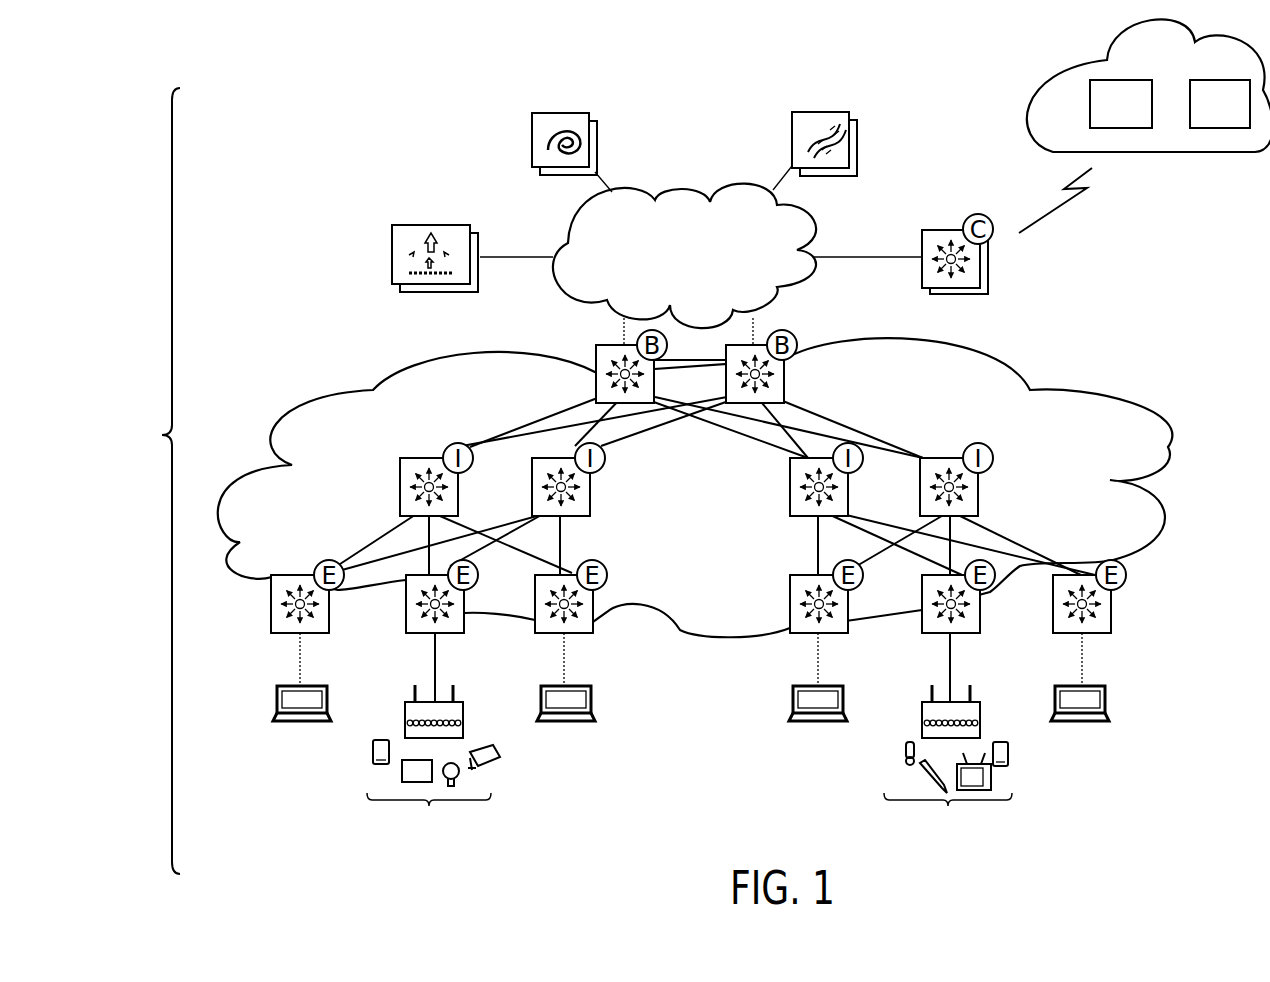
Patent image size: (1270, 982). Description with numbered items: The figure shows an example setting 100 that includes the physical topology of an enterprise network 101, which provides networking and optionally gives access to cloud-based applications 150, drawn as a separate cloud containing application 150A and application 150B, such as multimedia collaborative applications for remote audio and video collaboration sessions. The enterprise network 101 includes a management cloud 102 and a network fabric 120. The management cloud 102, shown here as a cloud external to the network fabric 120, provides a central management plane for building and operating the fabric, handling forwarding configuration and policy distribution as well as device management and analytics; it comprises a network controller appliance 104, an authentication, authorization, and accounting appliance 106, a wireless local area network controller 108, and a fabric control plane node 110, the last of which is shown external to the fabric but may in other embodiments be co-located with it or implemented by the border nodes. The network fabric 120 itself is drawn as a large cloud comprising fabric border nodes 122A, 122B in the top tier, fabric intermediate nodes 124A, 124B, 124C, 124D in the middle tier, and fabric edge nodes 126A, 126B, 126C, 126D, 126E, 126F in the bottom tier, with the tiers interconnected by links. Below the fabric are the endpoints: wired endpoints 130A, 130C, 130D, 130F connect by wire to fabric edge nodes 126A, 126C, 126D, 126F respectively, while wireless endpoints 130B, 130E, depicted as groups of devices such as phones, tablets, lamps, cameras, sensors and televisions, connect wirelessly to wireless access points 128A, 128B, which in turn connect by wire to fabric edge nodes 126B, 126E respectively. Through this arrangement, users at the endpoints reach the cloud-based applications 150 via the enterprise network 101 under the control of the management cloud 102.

The example setting 100 is at (375, 106).
The enterprise network 101 is at (150, 481).
The management cloud 102 is at (566, 232).
The network controller appliance 104 is at (791, 138).
The authentication, authorization, and accounting (AAA) appliance 106 is at (531, 137).
The wireless local area network controller (WLC) 108 is at (391, 258).
The fabric control plane node 110 is at (922, 240).
The network fabric 120 is at (702, 504).
The fabric border node 122A is at (596, 348).
The fabric border node 122B is at (797, 352).
The fabric intermediate node 124A is at (400, 484).
The fabric intermediate node 124B is at (590, 510).
The fabric intermediate node 124C is at (790, 507).
The fabric intermediate node 124D is at (979, 484).
The fabric edge node 126A is at (273, 634).
The fabric edge node 126B is at (406, 634).
The fabric edge node 126C is at (594, 622).
The fabric edge node 126D is at (846, 634).
The fabric edge node 126E is at (980, 634).
The fabric edge node 126F is at (1112, 634).
The wireless access point 128A is at (462, 700).
The wireless access point 128B is at (922, 720).
The wired endpoint 130A is at (289, 723).
The wireless endpoint 130B is at (433, 792).
The wired endpoint 130C is at (554, 723).
The wired endpoint 130D is at (808, 723).
The wireless endpoint 130E is at (948, 793).
The wired endpoint 130F is at (1086, 723).
The cloud-based applications 150 is at (1119, 126).
The application 150A is at (1142, 118).
The application 150B is at (1241, 118).